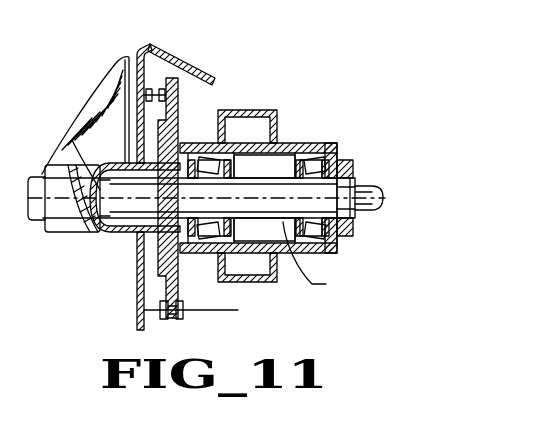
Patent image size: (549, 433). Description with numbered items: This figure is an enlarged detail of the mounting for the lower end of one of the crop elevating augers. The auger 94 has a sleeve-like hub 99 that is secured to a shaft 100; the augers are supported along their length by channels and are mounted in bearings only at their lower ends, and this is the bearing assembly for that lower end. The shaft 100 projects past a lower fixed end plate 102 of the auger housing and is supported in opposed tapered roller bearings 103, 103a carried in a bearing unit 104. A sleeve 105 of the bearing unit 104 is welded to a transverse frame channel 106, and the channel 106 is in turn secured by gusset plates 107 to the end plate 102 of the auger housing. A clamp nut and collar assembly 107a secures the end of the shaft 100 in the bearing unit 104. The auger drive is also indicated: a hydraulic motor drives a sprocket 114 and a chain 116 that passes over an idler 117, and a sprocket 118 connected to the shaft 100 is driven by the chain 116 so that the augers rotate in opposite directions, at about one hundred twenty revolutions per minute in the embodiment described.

The auger 94 is at (80, 121).
The sleeve-like hub 99 is at (52, 168).
The shaft 100 is at (238, 308).
The lower fixed end plate 102 is at (138, 52).
The tapered roller bearing 103 is at (213, 152).
The tapered roller bearing 103a is at (312, 152).
The bearing unit 104 is at (287, 138).
The sleeve 105 is at (323, 258).
The transverse frame channel 106 is at (255, 110).
The gusset plate 107 is at (238, 310).
The clamp nut and collar assembly 107a is at (355, 234).
The sprocket 114 is at (21, 5).
The chain 116 is at (0, 27).
The idler 117 is at (16, 60).
The sprocket 118 is at (186, 70).